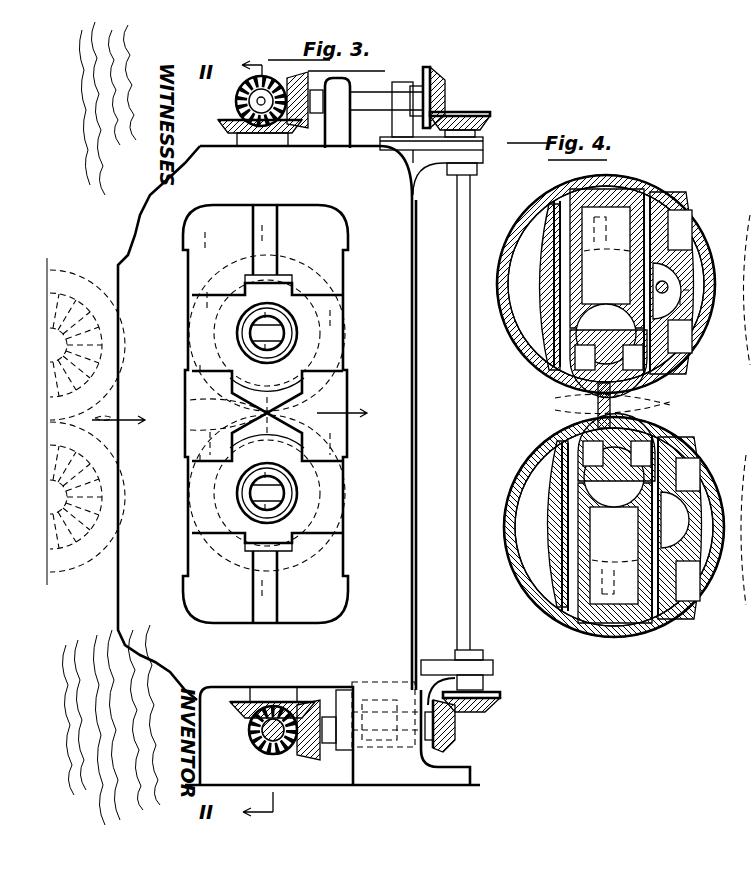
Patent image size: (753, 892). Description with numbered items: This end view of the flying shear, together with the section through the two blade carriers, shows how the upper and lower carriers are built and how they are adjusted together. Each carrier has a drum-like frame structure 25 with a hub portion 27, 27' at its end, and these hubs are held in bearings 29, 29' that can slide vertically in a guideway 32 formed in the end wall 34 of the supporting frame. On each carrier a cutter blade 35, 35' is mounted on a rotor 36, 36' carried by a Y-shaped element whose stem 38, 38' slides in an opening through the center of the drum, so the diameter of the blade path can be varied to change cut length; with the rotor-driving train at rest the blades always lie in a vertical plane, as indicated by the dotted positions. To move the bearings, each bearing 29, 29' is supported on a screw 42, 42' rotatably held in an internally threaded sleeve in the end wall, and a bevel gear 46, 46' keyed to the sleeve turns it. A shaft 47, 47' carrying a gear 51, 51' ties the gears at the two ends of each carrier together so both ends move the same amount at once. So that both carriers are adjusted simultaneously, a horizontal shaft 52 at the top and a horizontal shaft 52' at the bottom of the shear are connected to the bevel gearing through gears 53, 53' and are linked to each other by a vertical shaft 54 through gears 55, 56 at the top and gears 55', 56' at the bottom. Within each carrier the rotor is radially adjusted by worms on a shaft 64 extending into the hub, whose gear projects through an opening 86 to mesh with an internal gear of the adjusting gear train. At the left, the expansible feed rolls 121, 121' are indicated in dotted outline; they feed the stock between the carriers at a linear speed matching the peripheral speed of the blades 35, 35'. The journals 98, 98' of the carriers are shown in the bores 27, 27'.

In FIG. 4, the drum-like frame structure 25 is at (674, 205).
In FIG. 3, the hub portion 27 is at (316, 329).
In FIG. 3, the hub portion 27' is at (319, 493).
In FIG. 3, the bearing 29 is at (286, 341).
In FIG. 3, the bearing 29' is at (294, 478).
In FIG. 3, the guideway 32 is at (333, 250).
In FIG. 3, the end wall 34 is at (418, 332).
In FIG. 3, the cutter blade 35 is at (208, 403).
In FIG. 4, the cutter blade 35 is at (631, 405).
In FIG. 3, the cutter blade 35' is at (204, 429).
In FIG. 4, the cutter blade 35' is at (638, 413).
In FIG. 3, the rotor 36 is at (256, 390).
In FIG. 4, the rotor 36 is at (654, 364).
In FIG. 4, the rotor 36' is at (663, 448).
In FIG. 4, the stem 38 is at (606, 273).
In FIG. 4, the stem 38' is at (614, 542).
In FIG. 3, the screw 42 is at (282, 244).
In FIG. 3, the screw 42' is at (286, 583).
In FIG. 3, the bevel gear 46 is at (238, 131).
In FIG. 3, the bevel gear 46' is at (259, 714).
In FIG. 3, the shaft 47 is at (223, 104).
In FIG. 3, the shaft 47' is at (243, 740).
In FIG. 3, the gear 51 is at (249, 100).
In FIG. 3, the gear 51' is at (272, 742).
In FIG. 3, the horizontal shaft 52 is at (386, 113).
In FIG. 3, the horizontal shaft 52' is at (386, 730).
In FIG. 3, the gear 53 is at (330, 126).
In FIG. 3, the gear 53' is at (316, 736).
In FIG. 3, the vertical shaft 54 is at (460, 212).
In FIG. 3, the gear 55 is at (458, 94).
In FIG. 3, the gear 55' is at (466, 730).
In FIG. 3, the gear 56 is at (451, 116).
In FIG. 3, the gear 56' is at (486, 686).
In FIG. 4, the shaft 64 is at (668, 283).
In FIG. 4, the opening 86 is at (672, 300).
In FIG. 3, the roll journal 98 is at (322, 338).
In FIG. 3, the roll journal 98' is at (325, 503).
In FIG. 3, the expansible feed roll 121 is at (86, 332).
In FIG. 3, the expansible feed roll 121' is at (86, 510).